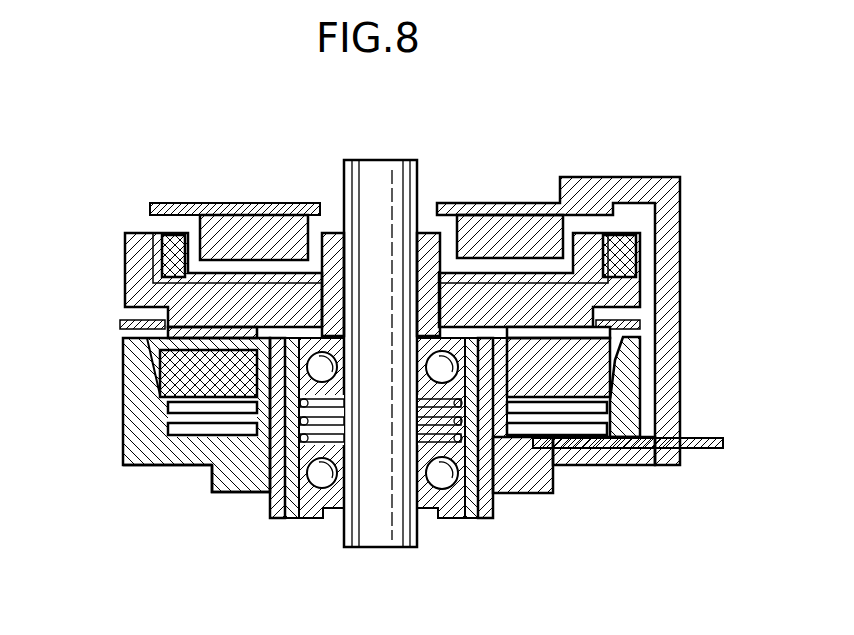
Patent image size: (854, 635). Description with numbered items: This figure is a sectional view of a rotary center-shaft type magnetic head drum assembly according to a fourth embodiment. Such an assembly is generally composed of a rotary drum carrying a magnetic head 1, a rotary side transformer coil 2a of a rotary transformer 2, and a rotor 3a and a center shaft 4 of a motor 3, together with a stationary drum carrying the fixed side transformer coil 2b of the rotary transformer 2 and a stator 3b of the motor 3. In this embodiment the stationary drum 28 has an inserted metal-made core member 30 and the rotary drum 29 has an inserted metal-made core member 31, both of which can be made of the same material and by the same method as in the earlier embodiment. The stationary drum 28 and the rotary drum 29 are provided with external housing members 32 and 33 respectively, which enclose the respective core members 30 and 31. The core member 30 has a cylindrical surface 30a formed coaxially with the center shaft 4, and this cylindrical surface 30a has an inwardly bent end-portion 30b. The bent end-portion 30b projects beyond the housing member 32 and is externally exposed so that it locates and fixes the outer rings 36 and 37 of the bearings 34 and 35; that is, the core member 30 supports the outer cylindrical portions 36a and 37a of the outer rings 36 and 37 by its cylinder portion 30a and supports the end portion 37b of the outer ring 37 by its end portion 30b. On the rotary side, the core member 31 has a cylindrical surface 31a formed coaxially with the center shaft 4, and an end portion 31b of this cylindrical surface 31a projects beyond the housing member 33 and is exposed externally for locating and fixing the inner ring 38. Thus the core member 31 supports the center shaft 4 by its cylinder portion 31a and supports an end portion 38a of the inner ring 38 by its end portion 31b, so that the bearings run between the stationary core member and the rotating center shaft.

The magnetic head 1 is at (160, 350).
The rotary transformer 2 is at (600, 418).
The rotary side transformer coil 2a is at (130, 410).
The fixed side transformer coil 2b is at (172, 453).
The motor 3 is at (504, 197).
The rotor 3a is at (160, 263).
The stator 3b is at (536, 224).
The center shaft 4 is at (402, 162).
The stationary drum 28 is at (628, 478).
The rotary drum 29 is at (126, 214).
The core member 30 is at (468, 518).
The cylindrical surface 30a is at (440, 519).
The inwardly bent end-portion 30b is at (455, 520).
The core member 31 is at (337, 337).
The cylindrical surface 31a is at (349, 245).
The end portion 31b is at (274, 218).
The external housing member 32 is at (538, 473).
The external housing member 33 is at (128, 243).
The bearing 34 is at (240, 380).
The bearing 35 is at (495, 497).
The outer ring 36 is at (263, 422).
The outer cylindrical portion 36a is at (175, 408).
The outer ring 37 is at (296, 519).
The outer cylindrical portion 37a is at (295, 440).
The end portion 37b is at (313, 520).
The inner ring 38 is at (428, 336).
The end portion 38a is at (342, 376).